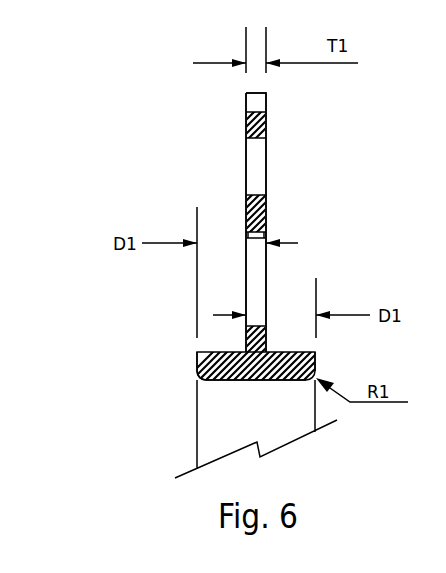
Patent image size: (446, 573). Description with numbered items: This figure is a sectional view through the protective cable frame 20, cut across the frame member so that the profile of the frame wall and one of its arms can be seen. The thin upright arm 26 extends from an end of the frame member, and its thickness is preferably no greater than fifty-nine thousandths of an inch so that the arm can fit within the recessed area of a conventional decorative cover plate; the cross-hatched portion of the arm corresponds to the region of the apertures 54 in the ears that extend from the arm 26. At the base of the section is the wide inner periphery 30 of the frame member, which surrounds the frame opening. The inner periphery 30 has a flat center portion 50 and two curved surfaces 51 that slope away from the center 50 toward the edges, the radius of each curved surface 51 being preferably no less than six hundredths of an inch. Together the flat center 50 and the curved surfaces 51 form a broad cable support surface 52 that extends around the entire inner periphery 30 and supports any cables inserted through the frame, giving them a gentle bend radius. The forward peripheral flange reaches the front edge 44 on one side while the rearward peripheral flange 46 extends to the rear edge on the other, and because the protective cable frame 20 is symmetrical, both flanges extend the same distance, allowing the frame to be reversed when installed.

The protective cable frame 20 is at (178, 138).
The apertures 54 is at (254, 167).
The arm 26 is at (266, 214).
The flat center portion 50 is at (255, 380).
The front edge 44 is at (199, 355).
The rearward peripheral flange 46 is at (308, 359).
The curved surfaces 51 is at (199, 376).
The cable support surface 52 is at (232, 382).
The inner periphery 30 is at (252, 400).